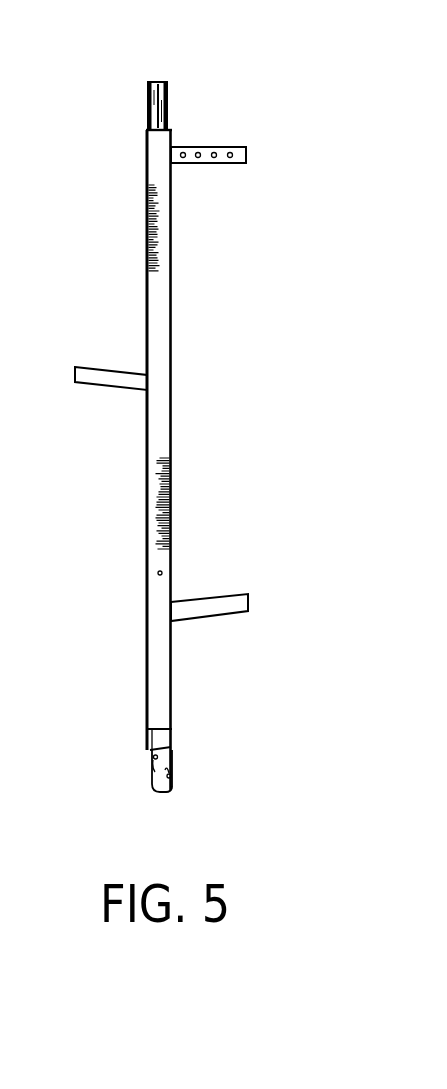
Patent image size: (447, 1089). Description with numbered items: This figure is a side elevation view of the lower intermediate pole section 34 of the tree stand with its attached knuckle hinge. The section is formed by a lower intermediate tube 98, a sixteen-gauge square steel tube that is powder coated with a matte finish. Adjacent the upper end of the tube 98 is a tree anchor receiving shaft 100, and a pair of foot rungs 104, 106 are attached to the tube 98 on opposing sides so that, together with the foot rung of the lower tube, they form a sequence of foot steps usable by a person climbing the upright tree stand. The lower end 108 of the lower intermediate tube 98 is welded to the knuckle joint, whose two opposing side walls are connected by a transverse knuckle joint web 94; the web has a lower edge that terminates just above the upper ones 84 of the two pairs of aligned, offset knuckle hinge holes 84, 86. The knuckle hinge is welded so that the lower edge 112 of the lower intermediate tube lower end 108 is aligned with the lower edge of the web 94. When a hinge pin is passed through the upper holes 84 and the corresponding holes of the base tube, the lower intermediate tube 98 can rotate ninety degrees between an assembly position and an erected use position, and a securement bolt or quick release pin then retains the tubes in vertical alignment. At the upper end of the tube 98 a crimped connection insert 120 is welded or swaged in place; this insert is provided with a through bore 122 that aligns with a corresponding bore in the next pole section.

The lower intermediate pole section 34 is at (216, 337).
The upper knuckle hinge holes 84 is at (152, 783).
The lower knuckle hinge holes 86 is at (172, 792).
The knuckle joint web 94 is at (153, 742).
The lower intermediate tube 98 is at (179, 427).
The tree anchor receiving shaft 100 is at (242, 148).
The foot rung 104 is at (228, 594).
The foot rung 106 is at (87, 366).
The lower end of the lower intermediate tube 108 is at (157, 745).
The lower edge of the lower intermediate tube lower end 112 is at (172, 760).
The crimped connection insert 120 is at (183, 77).
The through bore 122 is at (168, 116).